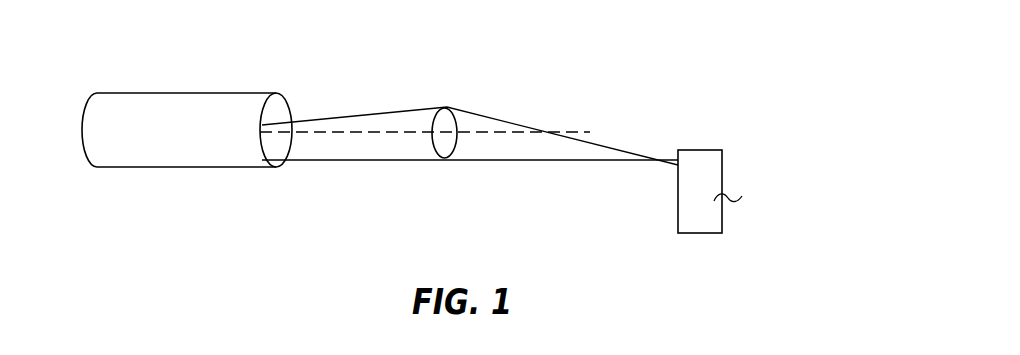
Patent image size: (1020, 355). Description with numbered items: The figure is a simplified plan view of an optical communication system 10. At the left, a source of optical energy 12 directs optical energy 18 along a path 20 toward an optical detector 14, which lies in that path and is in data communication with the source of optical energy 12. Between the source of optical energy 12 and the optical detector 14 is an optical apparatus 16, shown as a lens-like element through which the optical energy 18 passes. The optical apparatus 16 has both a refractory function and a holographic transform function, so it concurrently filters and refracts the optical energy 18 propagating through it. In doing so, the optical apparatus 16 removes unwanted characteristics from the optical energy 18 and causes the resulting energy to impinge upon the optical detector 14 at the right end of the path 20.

The optical communication system 10 is at (547, 70).
The source of optical energy 12 is at (247, 93).
The optical detector 14 is at (722, 165).
The optical apparatus 16 is at (444, 158).
The optical energy 18 is at (418, 107).
The path 20 is at (327, 133).